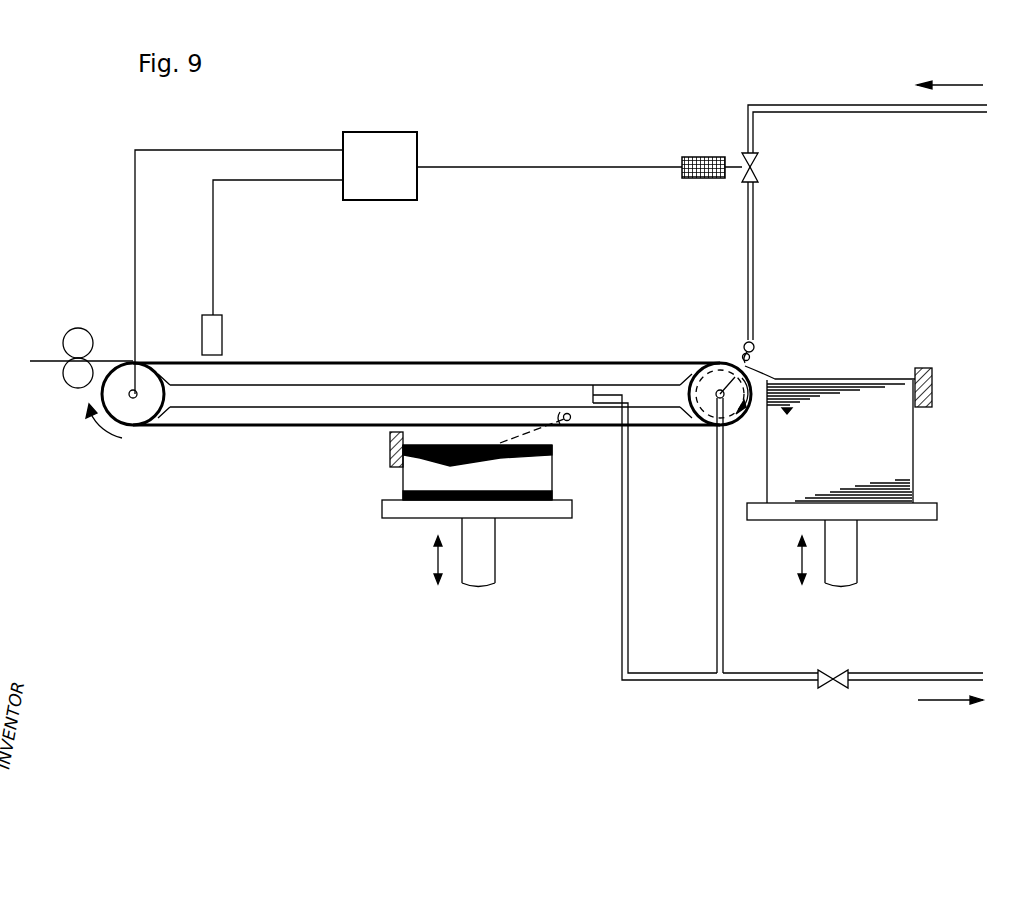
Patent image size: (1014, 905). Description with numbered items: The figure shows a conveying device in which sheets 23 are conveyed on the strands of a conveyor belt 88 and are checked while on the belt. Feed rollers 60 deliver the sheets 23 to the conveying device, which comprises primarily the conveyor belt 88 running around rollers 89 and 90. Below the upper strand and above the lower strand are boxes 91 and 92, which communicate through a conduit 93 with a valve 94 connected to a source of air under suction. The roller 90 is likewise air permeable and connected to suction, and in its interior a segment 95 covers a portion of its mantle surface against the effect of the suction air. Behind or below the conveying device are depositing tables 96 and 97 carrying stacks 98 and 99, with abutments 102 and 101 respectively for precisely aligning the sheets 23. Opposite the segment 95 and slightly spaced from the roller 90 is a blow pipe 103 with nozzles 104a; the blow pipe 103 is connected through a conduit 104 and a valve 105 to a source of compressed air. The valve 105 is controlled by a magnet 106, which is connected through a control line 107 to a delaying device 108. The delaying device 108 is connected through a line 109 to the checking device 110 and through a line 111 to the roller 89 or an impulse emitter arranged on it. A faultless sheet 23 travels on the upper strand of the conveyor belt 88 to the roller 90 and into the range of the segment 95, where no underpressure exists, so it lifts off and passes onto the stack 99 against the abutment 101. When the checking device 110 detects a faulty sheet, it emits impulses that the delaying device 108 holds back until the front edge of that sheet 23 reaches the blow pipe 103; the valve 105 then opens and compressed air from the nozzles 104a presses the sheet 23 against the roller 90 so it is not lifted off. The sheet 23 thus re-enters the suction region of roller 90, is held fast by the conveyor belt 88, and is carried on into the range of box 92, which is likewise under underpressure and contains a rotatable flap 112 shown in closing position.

The sheets 23 is at (111, 360).
The rollers 60 is at (65, 380).
The conveyor belt 88 is at (518, 362).
The roller 89 is at (140, 410).
The roller 90 is at (703, 418).
The box 91 is at (428, 373).
The box 92 is at (260, 413).
The conduit 93 is at (622, 616).
The valve 94 is at (825, 670).
The segment 95 is at (718, 375).
The depositing table 96 is at (405, 505).
The depositing table 97 is at (775, 505).
The stack 98 is at (528, 473).
The stack 99 is at (893, 452).
The abutment 101 is at (933, 380).
The abutment 102 is at (390, 445).
The blow pipe 103 is at (752, 340).
The conduit 104 is at (754, 222).
The nozzles 104a is at (757, 355).
The valve 105 is at (757, 160).
The magnet 106 is at (705, 157).
The control line 107 is at (522, 165).
The delaying device 108 is at (398, 160).
The line 109 is at (312, 180).
The checking device 110 is at (237, 324).
The line 111 is at (295, 150).
The rotatable flap 112 is at (570, 422).